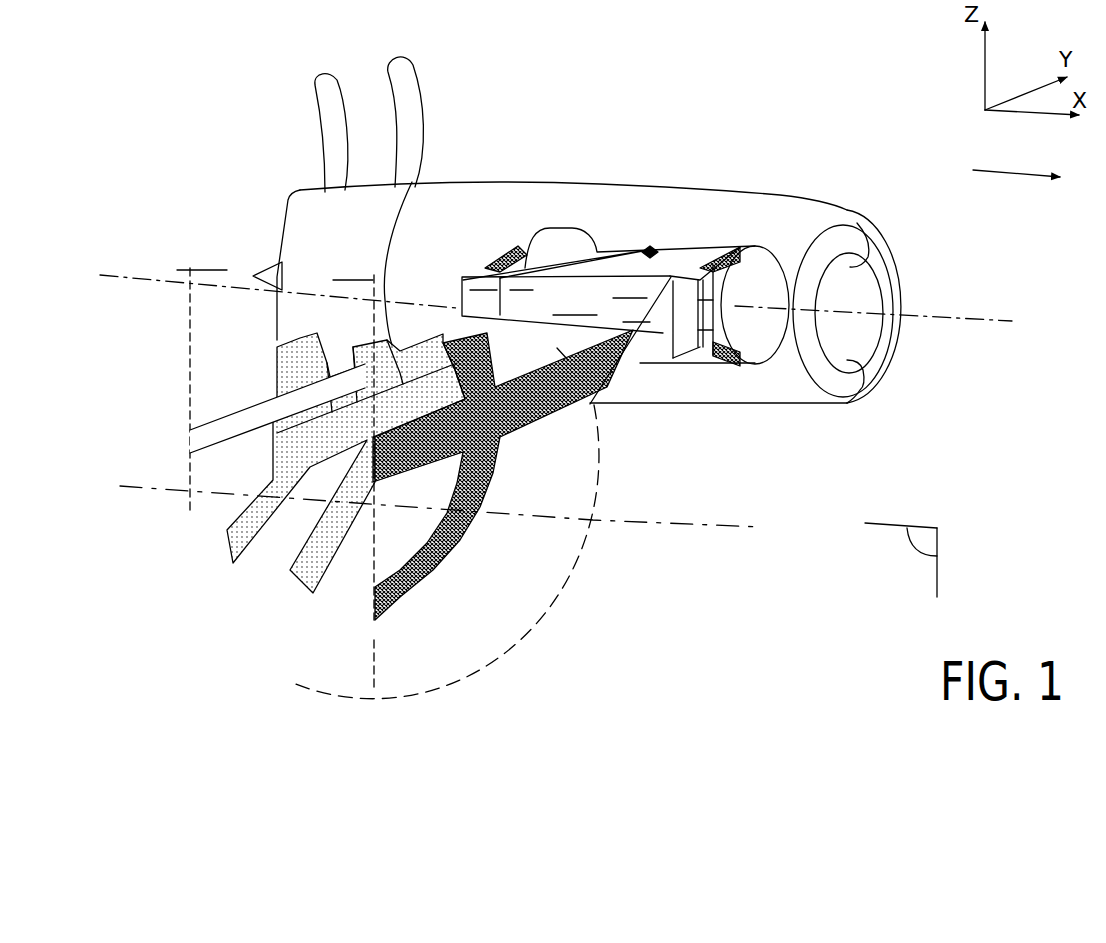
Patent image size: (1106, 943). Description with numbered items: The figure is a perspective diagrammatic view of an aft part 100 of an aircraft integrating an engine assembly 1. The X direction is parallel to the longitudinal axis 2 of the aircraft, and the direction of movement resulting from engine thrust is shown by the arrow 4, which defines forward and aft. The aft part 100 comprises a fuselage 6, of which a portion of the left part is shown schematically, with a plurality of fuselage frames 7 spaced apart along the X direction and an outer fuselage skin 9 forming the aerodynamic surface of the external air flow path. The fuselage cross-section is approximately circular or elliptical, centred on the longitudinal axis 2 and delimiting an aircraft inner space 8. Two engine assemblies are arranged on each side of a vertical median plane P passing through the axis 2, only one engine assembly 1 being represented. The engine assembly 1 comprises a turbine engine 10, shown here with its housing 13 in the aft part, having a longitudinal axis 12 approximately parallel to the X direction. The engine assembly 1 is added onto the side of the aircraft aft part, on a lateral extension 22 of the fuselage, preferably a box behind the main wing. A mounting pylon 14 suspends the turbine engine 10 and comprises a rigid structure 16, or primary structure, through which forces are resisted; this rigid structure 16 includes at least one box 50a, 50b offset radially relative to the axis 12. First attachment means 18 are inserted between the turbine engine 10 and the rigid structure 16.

The aft part 100 is at (127, 117).
The engine assembly 1 is at (682, 150).
The housing 13 is at (321, 137).
The turbine engine 10 is at (597, 240).
The mounting pylon 14 is at (524, 262).
The rigid structure 16 is at (664, 272).
The first attachment means 18 is at (505, 245).
The arrow 4 is at (1003, 172).
The fuselage 6 is at (132, 277).
The longitudinal axis 12 is at (190, 268).
The box 50a is at (462, 296).
The box 50b is at (633, 362).
The fuselage frames 7 is at (273, 382).
The aircraft inner space 8 is at (153, 438).
The lateral extension 22 is at (540, 417).
The outer fuselage skin 9 is at (557, 588).
The longitudinal axis 2 is at (757, 528).
The vertical median plane P is at (928, 538).